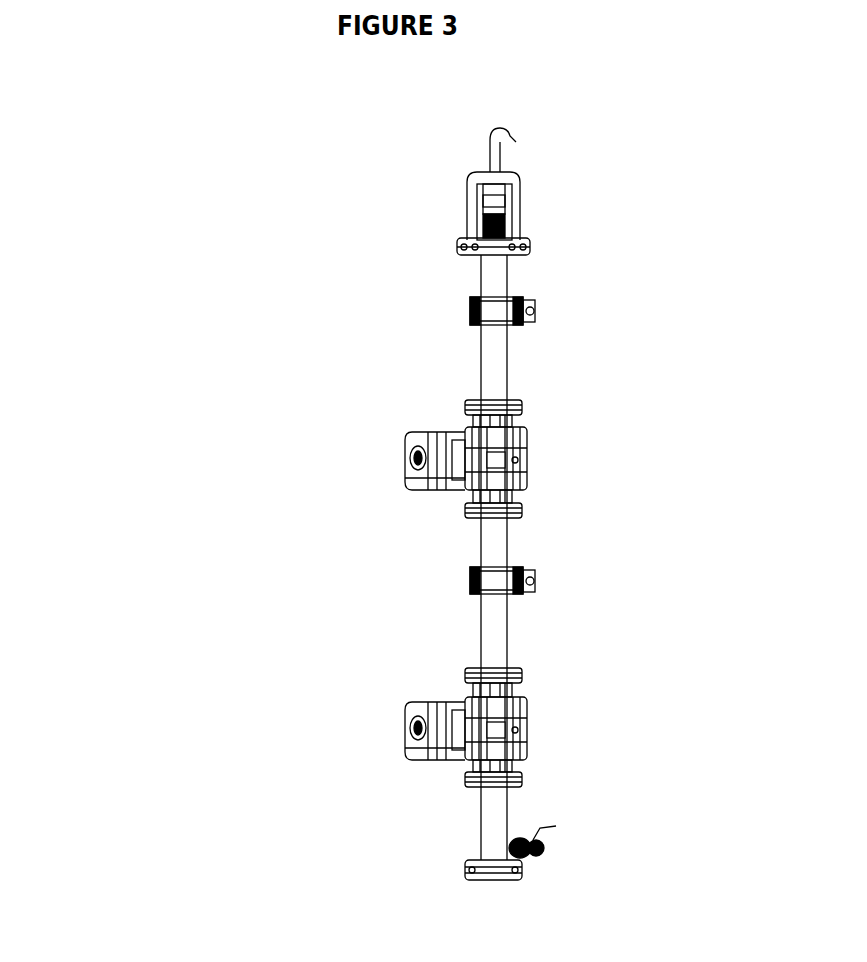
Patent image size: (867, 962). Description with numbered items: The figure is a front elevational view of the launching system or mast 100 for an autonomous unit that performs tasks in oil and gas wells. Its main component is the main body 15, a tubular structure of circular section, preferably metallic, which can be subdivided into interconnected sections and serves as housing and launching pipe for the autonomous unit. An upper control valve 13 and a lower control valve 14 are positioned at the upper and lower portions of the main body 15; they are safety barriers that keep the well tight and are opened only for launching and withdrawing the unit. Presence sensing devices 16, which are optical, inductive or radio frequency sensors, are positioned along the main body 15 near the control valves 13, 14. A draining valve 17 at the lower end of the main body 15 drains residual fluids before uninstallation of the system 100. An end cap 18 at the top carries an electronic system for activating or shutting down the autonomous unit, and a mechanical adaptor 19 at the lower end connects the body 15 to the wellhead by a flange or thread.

The launching system 100 is at (310, 330).
The upper control valve 13 is at (412, 480).
The lower control valve 14 is at (415, 750).
The main body 15 is at (481, 640).
The presence sensing devices 16 is at (535, 312).
The draining valve 17 is at (545, 848).
The end cap 18 is at (520, 208).
The mechanical adaptor 19 is at (465, 880).